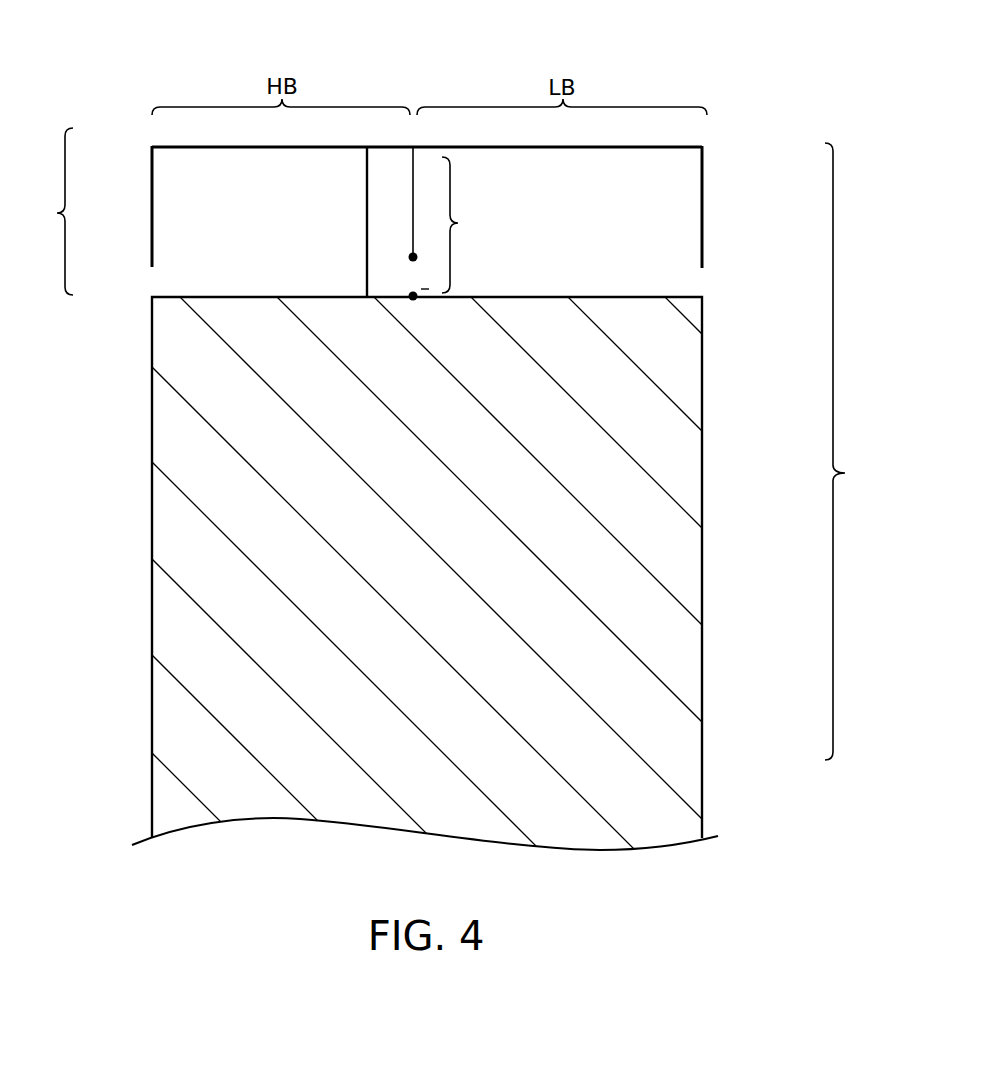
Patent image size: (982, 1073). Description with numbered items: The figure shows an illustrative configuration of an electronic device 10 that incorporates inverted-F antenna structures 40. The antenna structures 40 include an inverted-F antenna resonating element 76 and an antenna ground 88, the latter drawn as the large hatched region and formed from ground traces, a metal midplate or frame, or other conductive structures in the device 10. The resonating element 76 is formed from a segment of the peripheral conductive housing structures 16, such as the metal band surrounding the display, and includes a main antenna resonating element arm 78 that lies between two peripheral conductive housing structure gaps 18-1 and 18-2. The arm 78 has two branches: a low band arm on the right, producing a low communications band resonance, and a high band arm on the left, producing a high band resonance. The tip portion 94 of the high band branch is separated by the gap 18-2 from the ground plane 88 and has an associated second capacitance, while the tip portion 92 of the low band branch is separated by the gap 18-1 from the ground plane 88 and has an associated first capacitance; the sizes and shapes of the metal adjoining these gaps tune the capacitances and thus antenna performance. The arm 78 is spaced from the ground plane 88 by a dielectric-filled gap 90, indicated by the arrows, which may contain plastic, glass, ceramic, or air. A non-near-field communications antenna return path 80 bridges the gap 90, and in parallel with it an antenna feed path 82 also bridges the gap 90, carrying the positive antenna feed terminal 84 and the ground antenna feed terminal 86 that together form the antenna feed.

The electronic device 10 is at (852, 451).
The peripheral conductive housing structures 16 is at (727, 146).
The peripheral conductive housing structure gap 18-1 is at (714, 281).
The peripheral conductive housing structure gap 18-2 is at (138, 284).
The antenna structures 40 is at (102, 69).
The inverted-F antenna resonating element 76 is at (48, 211).
The main antenna resonating element arm 78 is at (533, 147).
The non-near-field communications antenna return path 80 is at (367, 210).
The non-near-field communications antenna feed path 82 is at (469, 225).
The positive antenna feed terminal 84 is at (410, 257).
The ground antenna feed terminal 86 is at (410, 296).
The antenna ground 88 is at (158, 530).
The gap 90 is at (188, 205).
The tip portion of low band branch 92 is at (702, 233).
The tip portion of high band branch 94 is at (152, 242).